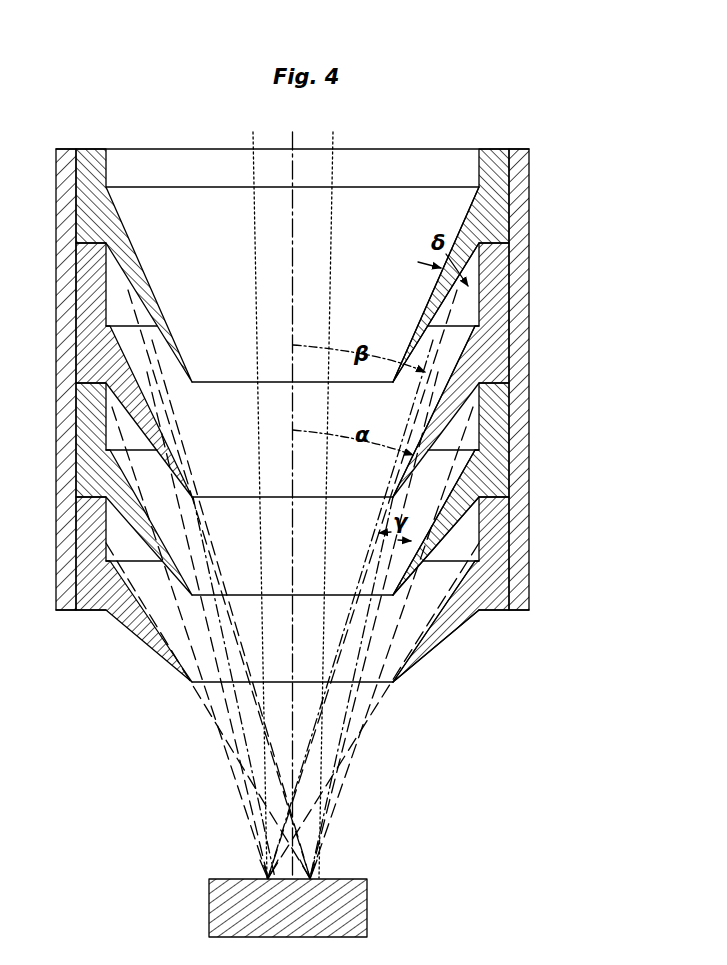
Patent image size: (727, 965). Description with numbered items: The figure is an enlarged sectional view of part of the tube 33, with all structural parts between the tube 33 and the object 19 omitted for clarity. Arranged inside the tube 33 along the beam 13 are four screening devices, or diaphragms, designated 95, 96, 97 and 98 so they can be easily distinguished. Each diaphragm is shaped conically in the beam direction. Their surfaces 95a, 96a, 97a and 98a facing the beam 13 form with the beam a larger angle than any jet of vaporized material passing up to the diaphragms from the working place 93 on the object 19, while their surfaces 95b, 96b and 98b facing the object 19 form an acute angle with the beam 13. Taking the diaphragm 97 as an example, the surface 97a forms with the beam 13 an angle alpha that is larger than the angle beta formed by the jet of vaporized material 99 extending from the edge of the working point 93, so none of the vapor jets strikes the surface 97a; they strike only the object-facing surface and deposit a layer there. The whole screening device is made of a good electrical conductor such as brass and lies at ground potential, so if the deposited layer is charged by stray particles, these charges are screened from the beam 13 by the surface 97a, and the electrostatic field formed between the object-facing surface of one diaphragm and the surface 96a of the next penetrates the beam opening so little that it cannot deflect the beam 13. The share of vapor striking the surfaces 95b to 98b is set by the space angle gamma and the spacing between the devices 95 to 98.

The beam 13 is at (310, 167).
The object 19 is at (354, 901).
The tube 33 is at (521, 190).
The working place 93 is at (297, 877).
The screening device 95 is at (512, 556).
The surface facing the beam 95a is at (422, 638).
The surface facing the object 95b is at (458, 627).
The screening device 96 is at (512, 434).
The surface facing the beam 96a is at (413, 556).
The surface facing the object 96b is at (437, 548).
The diaphragm 97 is at (512, 296).
The surface facing the beam 97a is at (430, 423).
The screening device 98 is at (495, 150).
The surface facing the beam 98a is at (427, 314).
The surface facing the object 98b is at (438, 310).
The jet of vaporized material 99 is at (325, 707).